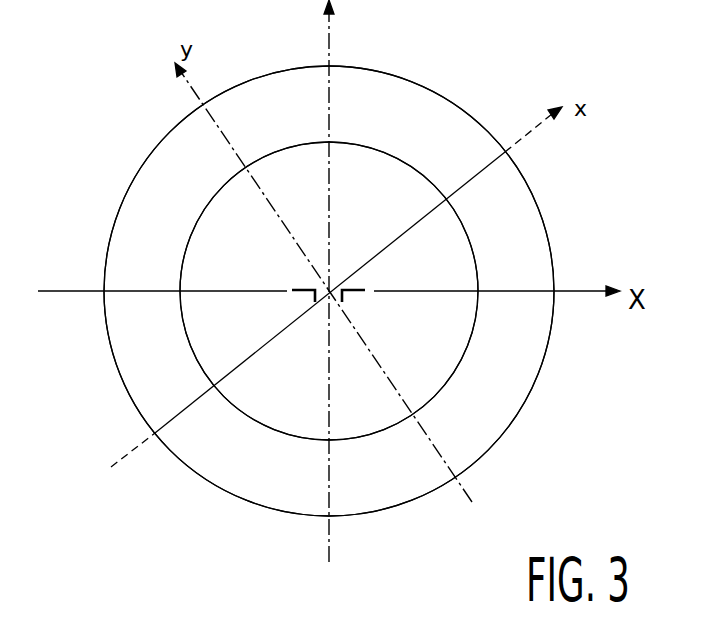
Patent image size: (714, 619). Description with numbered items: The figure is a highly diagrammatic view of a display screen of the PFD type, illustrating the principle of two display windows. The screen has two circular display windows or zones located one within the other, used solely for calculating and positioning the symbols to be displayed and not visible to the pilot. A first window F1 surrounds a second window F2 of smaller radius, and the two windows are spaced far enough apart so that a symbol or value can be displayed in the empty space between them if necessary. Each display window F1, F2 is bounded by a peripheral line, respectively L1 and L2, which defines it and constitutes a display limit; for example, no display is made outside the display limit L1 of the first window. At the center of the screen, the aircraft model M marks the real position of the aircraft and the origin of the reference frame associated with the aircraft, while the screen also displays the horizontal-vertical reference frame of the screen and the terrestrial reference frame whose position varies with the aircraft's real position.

The first window F1 is at (160, 138).
The display limit line of first window L1 is at (114, 228).
The display limit line of second window L2 is at (182, 313).
The second window F2 is at (188, 360).
The aircraft model M is at (358, 283).